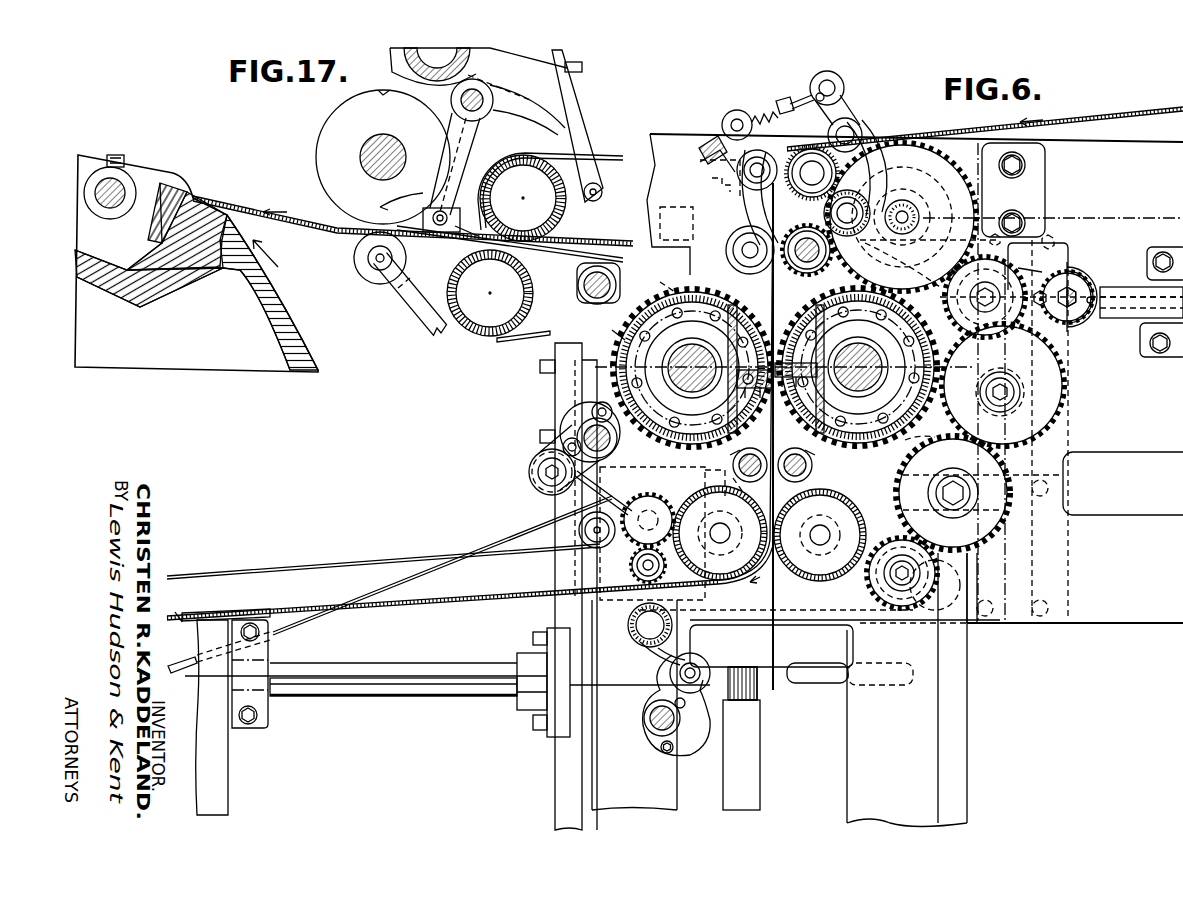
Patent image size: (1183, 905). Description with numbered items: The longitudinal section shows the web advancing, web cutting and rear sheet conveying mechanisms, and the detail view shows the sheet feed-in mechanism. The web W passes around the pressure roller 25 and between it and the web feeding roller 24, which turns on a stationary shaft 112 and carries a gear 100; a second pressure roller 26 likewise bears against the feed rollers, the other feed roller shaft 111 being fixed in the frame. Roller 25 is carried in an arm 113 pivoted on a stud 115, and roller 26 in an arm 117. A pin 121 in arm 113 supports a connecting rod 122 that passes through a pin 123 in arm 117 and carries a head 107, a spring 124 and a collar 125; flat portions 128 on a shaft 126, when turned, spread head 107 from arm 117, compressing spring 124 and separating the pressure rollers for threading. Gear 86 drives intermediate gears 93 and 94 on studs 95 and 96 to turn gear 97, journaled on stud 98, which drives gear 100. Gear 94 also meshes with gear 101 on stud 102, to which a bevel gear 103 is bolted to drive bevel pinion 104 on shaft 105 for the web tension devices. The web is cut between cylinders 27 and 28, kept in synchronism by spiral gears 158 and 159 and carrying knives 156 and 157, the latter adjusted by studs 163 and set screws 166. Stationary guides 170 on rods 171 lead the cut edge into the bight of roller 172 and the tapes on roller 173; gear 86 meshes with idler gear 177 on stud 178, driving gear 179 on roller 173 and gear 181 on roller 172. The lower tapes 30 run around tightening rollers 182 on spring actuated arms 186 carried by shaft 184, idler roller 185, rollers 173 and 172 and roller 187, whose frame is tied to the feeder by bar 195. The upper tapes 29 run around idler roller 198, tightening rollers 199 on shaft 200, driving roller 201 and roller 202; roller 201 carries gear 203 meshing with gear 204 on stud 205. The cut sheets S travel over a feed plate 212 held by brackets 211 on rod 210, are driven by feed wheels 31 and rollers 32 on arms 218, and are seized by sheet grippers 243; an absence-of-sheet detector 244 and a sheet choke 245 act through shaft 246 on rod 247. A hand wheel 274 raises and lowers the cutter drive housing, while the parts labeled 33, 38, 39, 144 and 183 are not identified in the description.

In FIG. 17, the sheet grippers 243 is at (138, 182).
In FIG. 17, the frame casting 33 is at (306, 338).
In FIG. 17, the cut sheets S is at (413, 217).
In FIG. 6, the cut sheets S is at (222, 605).
In FIG. 17, the feed wheels 31 is at (318, 143).
In FIG. 17, the shaft 246 is at (480, 112).
In FIG. 17, the upper tapes 29 is at (622, 156).
In FIG. 6, the upper tapes 29 is at (353, 567).
In FIG. 17, the absence-of-sheet detector 244 is at (400, 223).
In FIG. 17, the sheet choke 245 is at (455, 224).
In FIG. 17, the roller 202 is at (566, 212).
In FIG. 17, the feed plate 212 is at (545, 253).
In FIG. 17, the roller 32 is at (363, 263).
In FIG. 17, the lower feed roller arms 218 is at (410, 308).
In FIG. 17, the roller 187 is at (533, 293).
In FIG. 17, the rod 210 is at (590, 302).
In FIG. 17, the brackets 211 is at (617, 275).
In FIG. 17, the lower tapes 30 is at (527, 335).
In FIG. 6, the lower tapes 30 is at (605, 686).
In FIG. 6, the web W is at (1160, 112).
In FIG. 6, the pin 121 is at (840, 82).
In FIG. 6, the shaft 111 is at (842, 110).
In FIG. 6, the stud 115 is at (858, 130).
In FIG. 6, the connecting rod 122 is at (822, 93).
In FIG. 6, the collar 125 is at (783, 98).
In FIG. 6, the spring 124 is at (763, 112).
In FIG. 6, the pin 123 is at (737, 110).
In FIG. 6, the shaft 126 is at (720, 140).
In FIG. 6, the head 107 is at (700, 162).
In FIG. 6, the flat portions 128 is at (715, 178).
In FIG. 6, the arm 117 is at (752, 220).
In FIG. 6, the arm 113 is at (870, 163).
In FIG. 6, the idler roller 25 is at (860, 200).
In FIG. 6, the idler roller 26 is at (735, 258).
In FIG. 6, the web feeding roller 24 is at (832, 262).
In FIG. 6, the gear 100 is at (835, 262).
In FIG. 6, the shaft 112 is at (800, 285).
In FIG. 6, the stud 98 is at (917, 210).
In FIG. 6, the gear 97 is at (948, 172).
In FIG. 6, the stud 96 is at (983, 290).
In FIG. 6, the gear 101 is at (1040, 272).
In FIG. 6, the stud 102 is at (1058, 306).
In FIG. 6, the bevel gear 103 is at (1098, 336).
In FIG. 6, the bevel pinion 104 is at (1112, 287).
In FIG. 6, the shaft 105 is at (1125, 300).
In FIG. 6, the spiral gear 158 is at (905, 295).
In FIG. 6, the spiral gear 159 is at (672, 290).
In FIG. 6, the cutting knife 157 is at (720, 333).
In FIG. 6, the cylinder 28 is at (615, 327).
In FIG. 6, the gear 144 is at (880, 390).
In FIG. 6, the set screws 166 is at (766, 364).
In FIG. 6, the cutting knife 156 is at (785, 345).
In FIG. 6, the studs 163 is at (762, 395).
In FIG. 6, the stationary guides 170 is at (790, 455).
In FIG. 6, the rods 171 is at (743, 483).
In FIG. 6, the gear 181 is at (716, 483).
In FIG. 6, the intermediate gear 94 is at (975, 330).
In FIG. 6, the intermediate gear 93 is at (1047, 393).
In FIG. 6, the stud 95 is at (1005, 412).
In FIG. 6, the gear 86 is at (1003, 502).
In FIG. 6, the cylinder 27 is at (915, 445).
In FIG. 6, the stud 178 is at (897, 585).
In FIG. 6, the gear 179 is at (870, 547).
In FIG. 6, the intermediate gear 177 is at (938, 610).
In FIG. 6, the roller 172 is at (713, 577).
In FIG. 6, the tape driving roller 173 is at (823, 580).
In FIG. 6, the gear 203 is at (630, 577).
In FIG. 6, the rod 247 is at (493, 542).
In FIG. 6, the tightening rollers 199 is at (535, 485).
In FIG. 6, the shaft 200 is at (660, 455).
In FIG. 6, the idler roller 198 is at (582, 536).
In FIG. 6, the stud 205 is at (647, 512).
In FIG. 6, the gear 204 is at (639, 561).
In FIG. 6, the tape driving roller 201 is at (640, 565).
In FIG. 6, the spring actuated arms 186 is at (635, 632).
In FIG. 6, the idler roller 185 is at (645, 640).
In FIG. 6, the bar 195 is at (365, 673).
In FIG. 6, the tightening rollers 182 is at (696, 692).
In FIG. 6, the shaft 184 is at (643, 720).
In FIG. 6, the lever 183 is at (690, 735).
In FIG. 6, the shaft 38 is at (760, 758).
In FIG. 6, the collar 39 is at (757, 690).
In FIG. 6, the hand wheel 274 is at (832, 675).